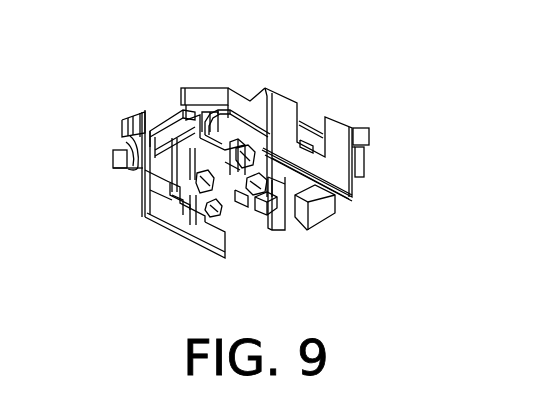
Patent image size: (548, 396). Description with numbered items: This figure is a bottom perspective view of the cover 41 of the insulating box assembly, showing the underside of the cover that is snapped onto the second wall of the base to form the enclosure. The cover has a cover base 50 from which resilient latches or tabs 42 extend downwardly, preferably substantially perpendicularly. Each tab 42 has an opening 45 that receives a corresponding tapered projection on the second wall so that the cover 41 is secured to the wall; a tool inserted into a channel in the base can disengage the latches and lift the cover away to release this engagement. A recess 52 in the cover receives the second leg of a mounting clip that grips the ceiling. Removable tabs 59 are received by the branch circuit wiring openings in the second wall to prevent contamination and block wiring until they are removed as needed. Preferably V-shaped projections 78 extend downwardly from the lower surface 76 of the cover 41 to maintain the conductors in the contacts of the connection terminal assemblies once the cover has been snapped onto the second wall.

The cover 41 is at (390, 118).
The resilient latches or tabs 42 is at (147, 220).
The openings 45 is at (308, 118).
The cover base 50 is at (198, 88).
The recess 52 is at (120, 139).
The removable tabs 59 is at (137, 170).
The lower surface 76 is at (228, 132).
The projections 78 is at (208, 214).